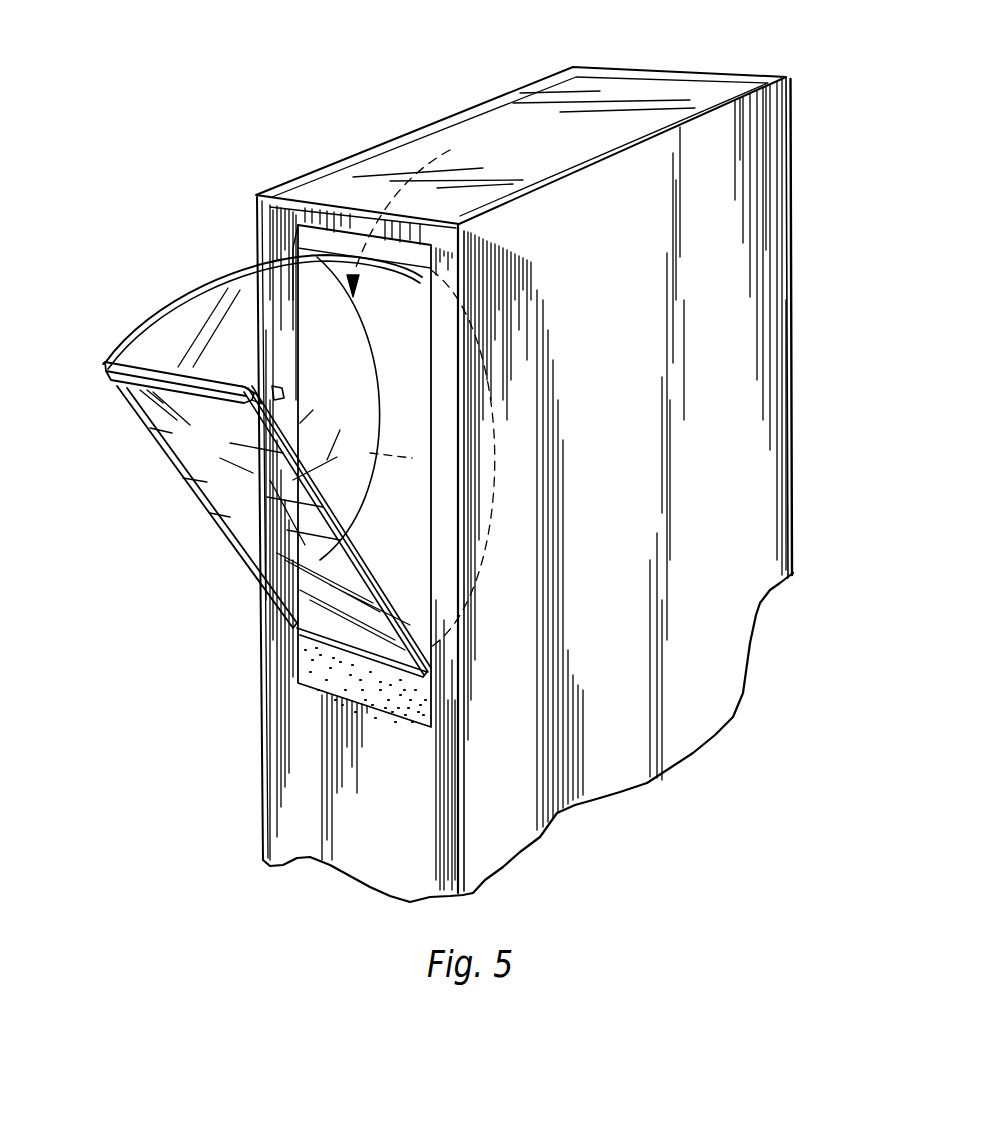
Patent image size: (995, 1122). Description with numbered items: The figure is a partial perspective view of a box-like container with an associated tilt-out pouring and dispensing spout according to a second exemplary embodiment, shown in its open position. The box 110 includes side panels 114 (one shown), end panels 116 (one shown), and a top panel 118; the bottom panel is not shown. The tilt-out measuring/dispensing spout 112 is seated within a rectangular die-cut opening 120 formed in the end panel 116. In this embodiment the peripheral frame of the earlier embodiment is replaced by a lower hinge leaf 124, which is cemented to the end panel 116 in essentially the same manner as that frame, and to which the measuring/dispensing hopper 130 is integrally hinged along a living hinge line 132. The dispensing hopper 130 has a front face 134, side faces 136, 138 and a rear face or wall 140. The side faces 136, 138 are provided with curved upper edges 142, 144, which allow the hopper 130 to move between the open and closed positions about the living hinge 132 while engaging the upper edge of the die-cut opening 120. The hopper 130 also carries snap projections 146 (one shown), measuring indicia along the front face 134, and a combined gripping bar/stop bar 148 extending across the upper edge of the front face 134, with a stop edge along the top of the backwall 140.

The box 110 is at (812, 244).
The tilt-out measuring/dispensing spout 112 is at (142, 537).
The side panel 114 is at (740, 387).
The end panel 116 is at (300, 822).
The top panel 118 is at (605, 86).
The die-cut opening 120 is at (450, 150).
The lower hinge leaf 124 is at (377, 697).
The measuring/dispensing hopper 130 is at (230, 441).
The living hinge line 132 is at (337, 653).
The front face 134 is at (253, 550).
The side face 136 is at (240, 313).
The side face 138 is at (337, 345).
The rear face or wall 140 is at (337, 530).
The curved upper edge 142 is at (188, 303).
The curved upper edge 144 is at (267, 377).
The snap projection 146 is at (282, 392).
The gripping bar/stop bar 148 is at (118, 382).